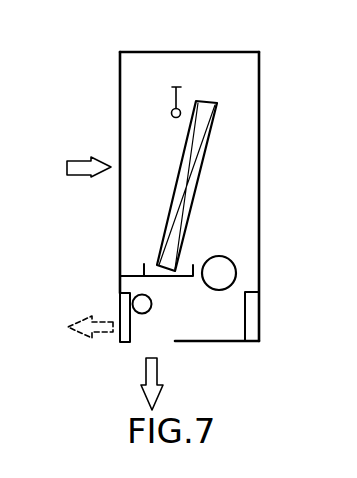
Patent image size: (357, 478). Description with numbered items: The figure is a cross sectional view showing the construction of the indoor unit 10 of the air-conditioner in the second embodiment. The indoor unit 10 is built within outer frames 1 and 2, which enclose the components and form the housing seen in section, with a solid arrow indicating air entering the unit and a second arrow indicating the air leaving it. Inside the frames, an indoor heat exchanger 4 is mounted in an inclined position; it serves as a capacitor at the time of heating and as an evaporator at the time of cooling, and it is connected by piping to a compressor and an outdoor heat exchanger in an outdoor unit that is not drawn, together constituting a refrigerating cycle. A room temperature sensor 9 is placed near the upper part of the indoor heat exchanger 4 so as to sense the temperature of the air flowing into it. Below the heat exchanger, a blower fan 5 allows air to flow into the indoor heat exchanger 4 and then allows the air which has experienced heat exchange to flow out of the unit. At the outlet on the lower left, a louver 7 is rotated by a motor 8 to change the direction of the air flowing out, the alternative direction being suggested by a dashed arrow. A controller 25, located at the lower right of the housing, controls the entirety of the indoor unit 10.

The indoor unit 10 is at (268, 71).
The outer frame 1 is at (120, 103).
The outer frame 2 is at (262, 147).
The indoor heat exchanger 4 is at (206, 108).
The room temperature sensor 9 is at (174, 109).
The blower fan 5 is at (236, 263).
The controller 25 is at (262, 307).
The louver 7 is at (122, 303).
The motor 8 is at (143, 314).